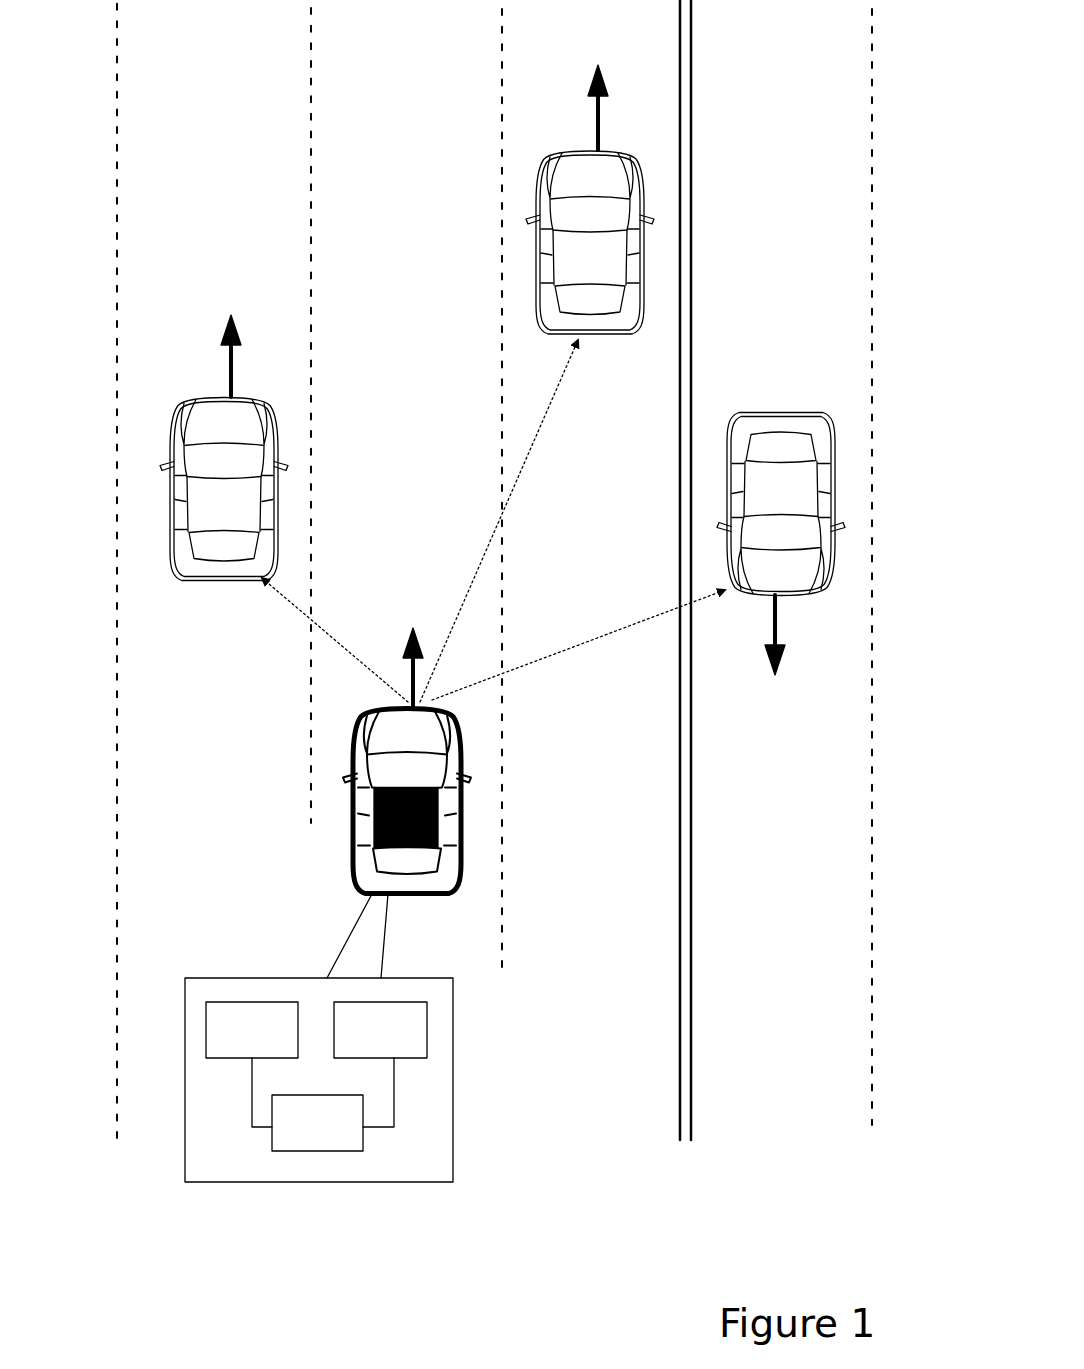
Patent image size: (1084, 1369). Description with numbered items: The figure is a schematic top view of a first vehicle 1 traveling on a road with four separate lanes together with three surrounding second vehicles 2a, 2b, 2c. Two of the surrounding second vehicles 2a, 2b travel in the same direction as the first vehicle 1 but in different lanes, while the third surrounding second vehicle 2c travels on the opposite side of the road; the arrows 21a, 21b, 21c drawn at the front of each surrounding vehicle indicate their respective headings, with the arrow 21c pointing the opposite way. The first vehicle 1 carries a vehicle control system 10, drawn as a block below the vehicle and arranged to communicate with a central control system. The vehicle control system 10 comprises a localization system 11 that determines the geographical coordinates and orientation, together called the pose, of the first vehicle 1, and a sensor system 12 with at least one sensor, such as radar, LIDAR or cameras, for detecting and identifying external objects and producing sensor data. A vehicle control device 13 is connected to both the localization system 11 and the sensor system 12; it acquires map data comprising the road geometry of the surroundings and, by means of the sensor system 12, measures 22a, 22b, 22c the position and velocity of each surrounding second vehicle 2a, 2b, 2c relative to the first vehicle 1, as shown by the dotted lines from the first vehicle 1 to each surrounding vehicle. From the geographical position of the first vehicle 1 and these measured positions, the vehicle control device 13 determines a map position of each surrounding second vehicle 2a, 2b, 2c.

The first vehicle 1 is at (455, 817).
The surrounding second vehicle 2a is at (182, 458).
The surrounding second vehicle 2b is at (640, 267).
The surrounding second vehicle 2c is at (836, 477).
The motion direction of vehicle 2a 21a is at (232, 385).
The motion direction of vehicle 2b 21b is at (598, 142).
The motion direction of vehicle 2c 21c is at (778, 630).
The measurement of position and velocity 22a is at (328, 640).
The measurement of position and velocity 22b is at (520, 480).
The measurement of position and velocity 22c is at (602, 640).
The vehicle control system 10 is at (324, 1033).
The localization system 11 is at (412, 1002).
The sensor system 12 is at (246, 1002).
The vehicle control device 13 is at (272, 1131).